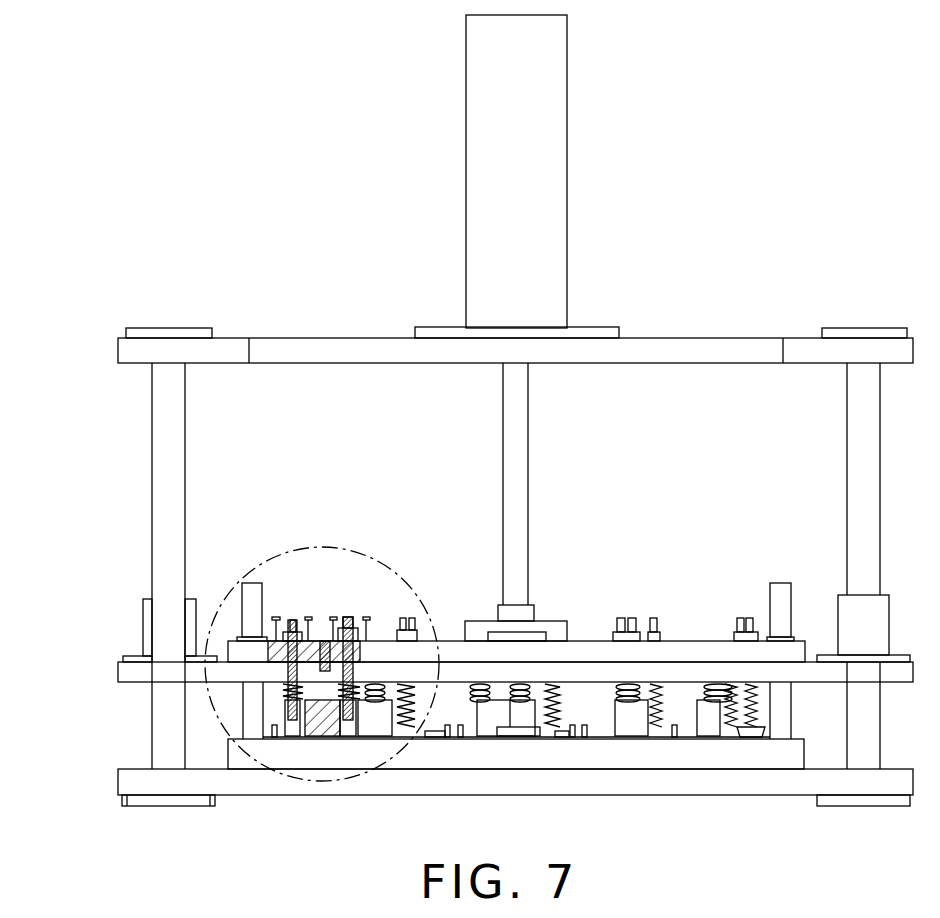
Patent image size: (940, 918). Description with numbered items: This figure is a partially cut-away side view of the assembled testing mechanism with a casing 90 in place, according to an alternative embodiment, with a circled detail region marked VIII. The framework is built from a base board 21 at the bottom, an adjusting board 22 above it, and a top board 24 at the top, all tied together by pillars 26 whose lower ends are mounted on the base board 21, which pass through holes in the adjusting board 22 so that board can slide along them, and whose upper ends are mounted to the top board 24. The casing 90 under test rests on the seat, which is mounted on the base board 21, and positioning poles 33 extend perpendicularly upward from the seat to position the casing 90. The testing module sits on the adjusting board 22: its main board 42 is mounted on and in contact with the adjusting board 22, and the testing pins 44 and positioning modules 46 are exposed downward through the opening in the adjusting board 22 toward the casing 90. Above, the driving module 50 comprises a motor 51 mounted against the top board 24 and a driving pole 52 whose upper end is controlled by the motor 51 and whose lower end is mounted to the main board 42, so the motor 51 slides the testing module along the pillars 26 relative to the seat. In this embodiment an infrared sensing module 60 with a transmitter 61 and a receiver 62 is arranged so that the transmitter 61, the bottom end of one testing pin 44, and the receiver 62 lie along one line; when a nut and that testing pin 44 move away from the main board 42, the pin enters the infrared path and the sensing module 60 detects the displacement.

The base board 21 is at (125, 785).
The adjusting board 22 is at (147, 675).
The top board 24 is at (321, 355).
The pillars 26 is at (168, 438).
The positioning poles 33 is at (252, 605).
The main board 42 is at (448, 650).
The testing pins 44 is at (652, 740).
The positioning modules 46 is at (372, 720).
The driving module 50 is at (569, 328).
The motor 51 is at (537, 208).
The driving pole 52 is at (515, 383).
The infrared sensing module 60 is at (337, 593).
The transmitter 61 is at (333, 618).
The receiver 62 is at (367, 618).
The casing 90 is at (497, 740).
The detail view region VIII is at (267, 557).